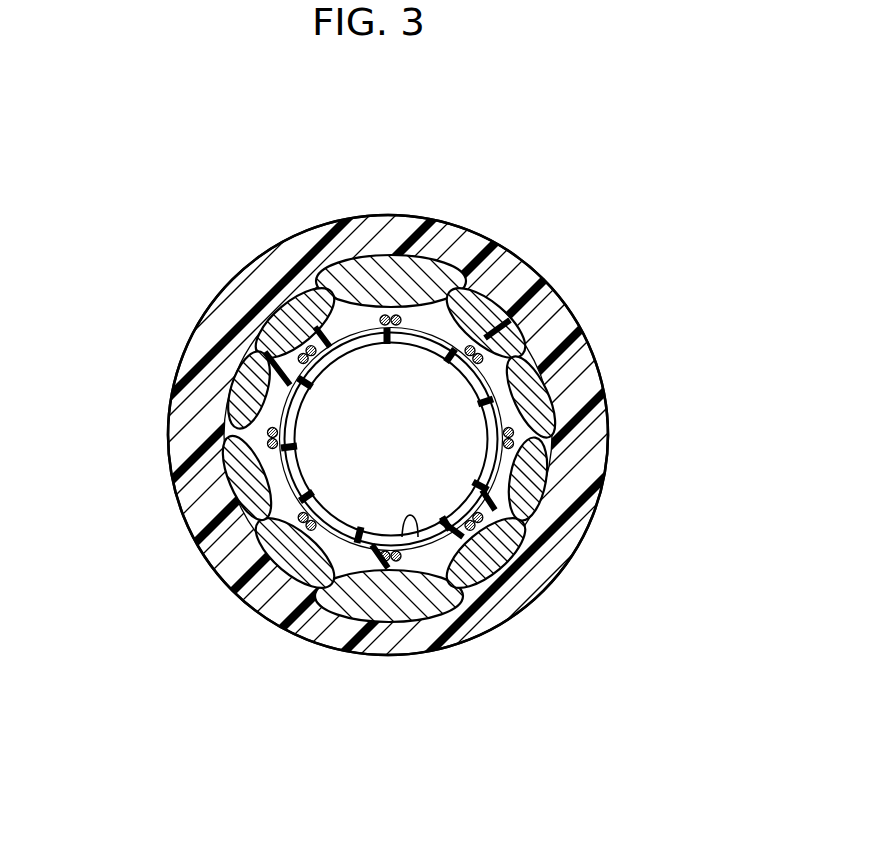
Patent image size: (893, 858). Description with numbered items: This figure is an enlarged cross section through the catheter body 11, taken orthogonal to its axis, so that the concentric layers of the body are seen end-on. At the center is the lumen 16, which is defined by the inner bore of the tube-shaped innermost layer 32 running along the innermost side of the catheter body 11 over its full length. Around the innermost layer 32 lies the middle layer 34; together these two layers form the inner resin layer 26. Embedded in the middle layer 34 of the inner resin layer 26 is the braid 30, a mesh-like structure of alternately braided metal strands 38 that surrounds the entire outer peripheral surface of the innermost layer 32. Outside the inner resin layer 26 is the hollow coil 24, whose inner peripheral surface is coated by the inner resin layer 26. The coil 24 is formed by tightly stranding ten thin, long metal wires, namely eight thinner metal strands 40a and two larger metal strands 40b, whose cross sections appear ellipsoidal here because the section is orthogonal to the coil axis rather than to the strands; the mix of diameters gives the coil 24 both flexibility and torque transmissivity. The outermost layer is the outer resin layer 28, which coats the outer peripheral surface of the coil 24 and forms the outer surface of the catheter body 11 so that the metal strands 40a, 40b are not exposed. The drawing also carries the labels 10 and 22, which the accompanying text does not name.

The cable 10 is at (532, 227).
The catheter body 11 is at (388, 435).
The outer sheath 22 is at (614, 421).
The hollow coil 24 is at (218, 488).
The inner resin layer 26 is at (285, 168).
The outer resin layer 28 is at (232, 318).
The braid 30 is at (516, 452).
The innermost layer 32 is at (325, 315).
The middle layer 34 is at (358, 318).
The metal strands for braiding 38 is at (472, 351).
The metal strands for coiling 40a is at (540, 398).
The metal strands for coiling 40b is at (383, 262).
The lumen 16 is at (460, 570).